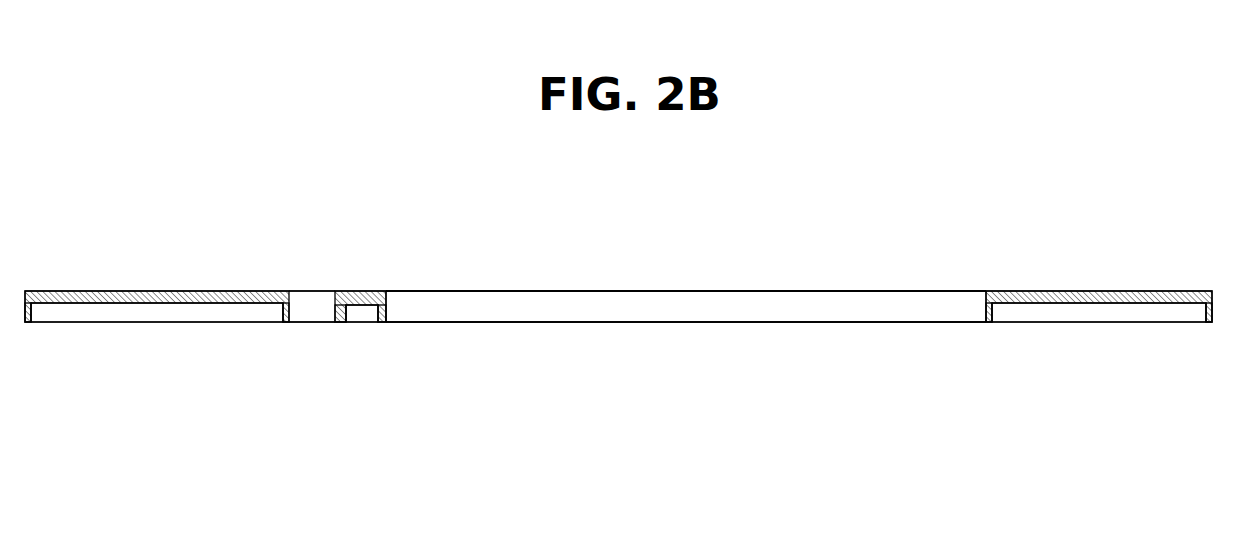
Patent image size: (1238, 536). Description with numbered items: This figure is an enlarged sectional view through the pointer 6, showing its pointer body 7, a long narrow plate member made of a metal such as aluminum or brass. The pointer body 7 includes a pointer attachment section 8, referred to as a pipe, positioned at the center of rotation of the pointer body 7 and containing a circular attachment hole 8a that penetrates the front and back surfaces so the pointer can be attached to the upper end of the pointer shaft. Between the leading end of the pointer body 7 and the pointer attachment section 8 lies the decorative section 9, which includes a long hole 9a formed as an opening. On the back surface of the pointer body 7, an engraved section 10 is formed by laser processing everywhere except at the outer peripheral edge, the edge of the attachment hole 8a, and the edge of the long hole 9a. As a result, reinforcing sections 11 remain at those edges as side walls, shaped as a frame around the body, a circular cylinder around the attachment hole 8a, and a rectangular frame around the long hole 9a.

The pointer 6 is at (186, 290).
The pointer body 7 is at (488, 291).
The pointer attachment section 8 is at (317, 290).
The attachment hole 8a is at (303, 292).
The decorative section 9 is at (626, 322).
The long hole 9a is at (740, 303).
The engraved section 10 is at (167, 315).
The reinforcing sections 11 is at (33, 315).